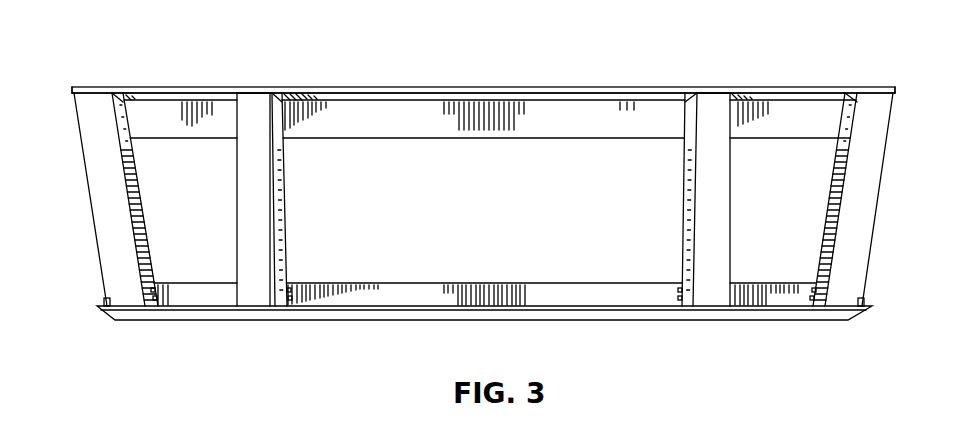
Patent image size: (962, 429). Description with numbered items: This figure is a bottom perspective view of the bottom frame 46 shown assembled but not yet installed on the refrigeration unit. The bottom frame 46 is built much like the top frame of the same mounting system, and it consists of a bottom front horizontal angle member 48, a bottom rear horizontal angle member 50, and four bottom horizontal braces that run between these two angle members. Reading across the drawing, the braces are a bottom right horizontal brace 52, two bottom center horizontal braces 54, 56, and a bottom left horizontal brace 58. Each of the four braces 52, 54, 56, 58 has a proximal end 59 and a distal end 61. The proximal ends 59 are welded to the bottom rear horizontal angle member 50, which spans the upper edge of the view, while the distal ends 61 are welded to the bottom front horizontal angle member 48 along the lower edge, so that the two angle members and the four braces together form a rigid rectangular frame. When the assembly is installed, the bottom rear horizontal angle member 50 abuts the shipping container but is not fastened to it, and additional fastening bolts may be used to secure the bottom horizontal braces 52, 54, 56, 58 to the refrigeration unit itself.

The bottom frame 46 is at (496, 74).
The bottom front horizontal angle member 48 is at (415, 293).
The bottom rear horizontal angle member 50 is at (392, 124).
The bottom right horizontal brace 52 is at (858, 192).
The bottom center horizontal brace 54 is at (706, 297).
The bottom center horizontal brace 56 is at (258, 293).
The bottom left horizontal brace 58 is at (110, 215).
The proximal end 59 is at (75, 95).
The distal end 61 is at (110, 300).